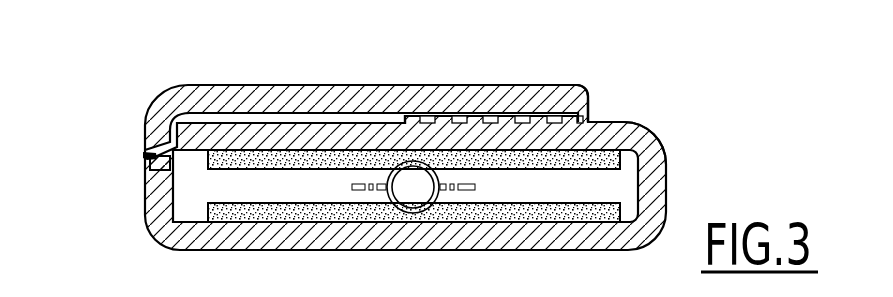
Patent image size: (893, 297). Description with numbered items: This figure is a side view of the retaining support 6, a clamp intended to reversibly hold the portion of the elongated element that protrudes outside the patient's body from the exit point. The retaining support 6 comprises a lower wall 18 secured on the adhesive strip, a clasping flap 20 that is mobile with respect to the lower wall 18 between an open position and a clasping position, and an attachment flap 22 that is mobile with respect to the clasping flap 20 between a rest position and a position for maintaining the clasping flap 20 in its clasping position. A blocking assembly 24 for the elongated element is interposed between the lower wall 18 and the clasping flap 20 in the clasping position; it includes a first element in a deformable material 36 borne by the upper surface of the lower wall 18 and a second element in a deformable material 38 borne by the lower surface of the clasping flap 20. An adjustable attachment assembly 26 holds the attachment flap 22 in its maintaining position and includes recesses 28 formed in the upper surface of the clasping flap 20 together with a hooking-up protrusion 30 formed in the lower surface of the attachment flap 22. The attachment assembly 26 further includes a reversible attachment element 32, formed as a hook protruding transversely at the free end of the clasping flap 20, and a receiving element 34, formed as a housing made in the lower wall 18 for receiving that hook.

The retaining support 6 is at (687, 84).
The lower wall 18 is at (424, 246).
The clasping flap 20 is at (349, 143).
The attachment flap 22 is at (284, 88).
The blocking assembly 24 is at (625, 213).
The attachment assembly 26 is at (493, 110).
The recesses 28 is at (578, 115).
The hooking-up protrusion 30 is at (592, 112).
The reversible attachment element 32 is at (142, 154).
The receiving element 34 is at (148, 177).
The first element in a deformable material 36 is at (343, 166).
The second element in a deformable material 38 is at (382, 220).